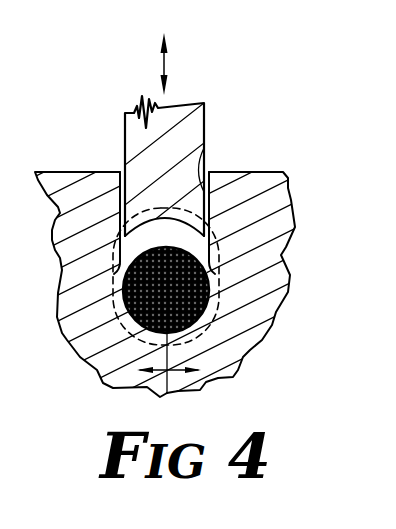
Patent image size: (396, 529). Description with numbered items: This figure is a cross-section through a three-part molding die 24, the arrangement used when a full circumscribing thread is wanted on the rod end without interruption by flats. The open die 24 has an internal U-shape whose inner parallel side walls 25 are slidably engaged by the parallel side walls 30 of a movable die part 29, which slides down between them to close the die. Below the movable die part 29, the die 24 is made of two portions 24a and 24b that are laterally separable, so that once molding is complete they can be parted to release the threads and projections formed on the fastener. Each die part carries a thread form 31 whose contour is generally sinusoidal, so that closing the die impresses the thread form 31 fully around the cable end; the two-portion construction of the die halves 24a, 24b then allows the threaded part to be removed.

The open molding die 24 is at (198, 253).
The die portion 24a is at (108, 252).
The die portion 24b is at (275, 252).
The inner parallel side walls 25 is at (204, 148).
The movable die part 29 is at (205, 103).
The parallel side walls 30 is at (118, 172).
The thread form 31 is at (223, 190).